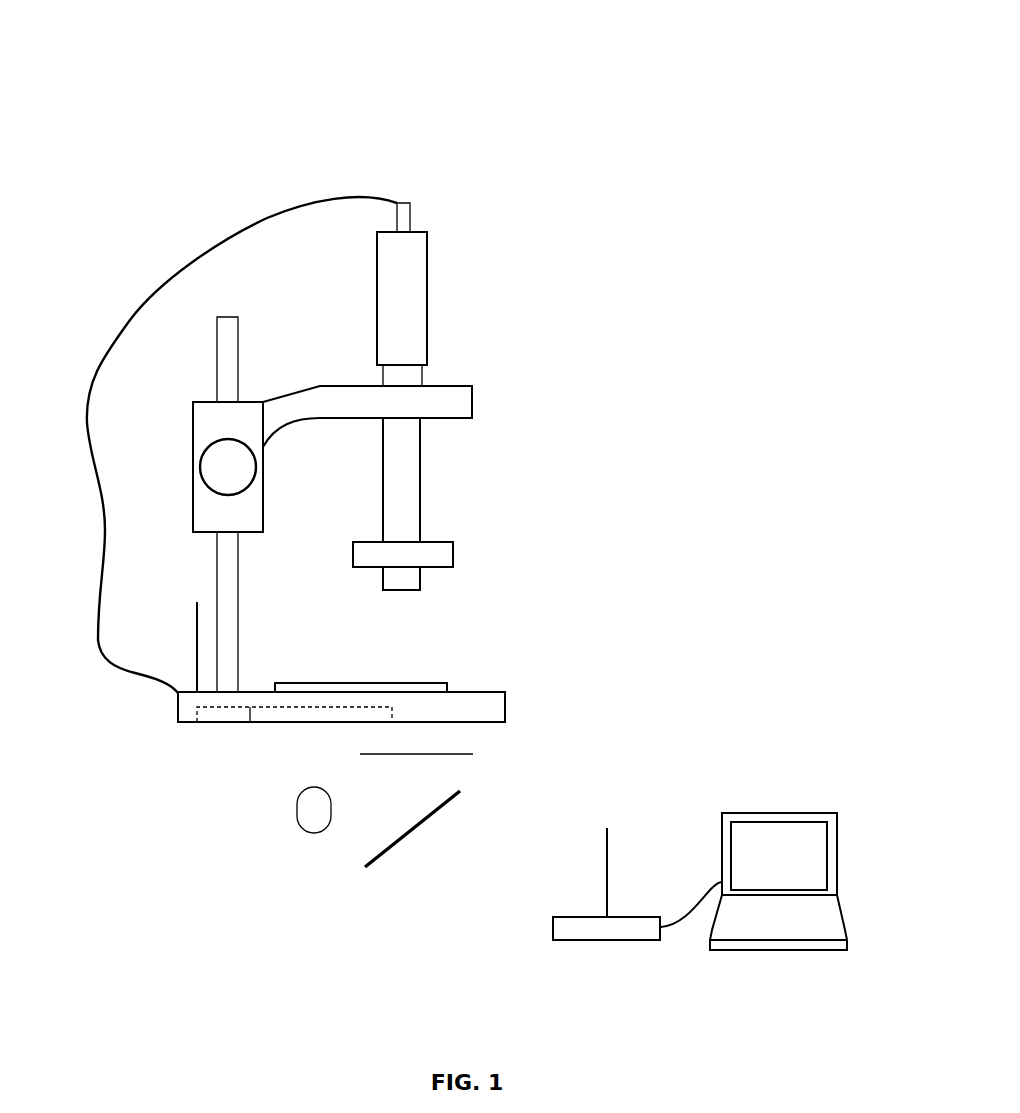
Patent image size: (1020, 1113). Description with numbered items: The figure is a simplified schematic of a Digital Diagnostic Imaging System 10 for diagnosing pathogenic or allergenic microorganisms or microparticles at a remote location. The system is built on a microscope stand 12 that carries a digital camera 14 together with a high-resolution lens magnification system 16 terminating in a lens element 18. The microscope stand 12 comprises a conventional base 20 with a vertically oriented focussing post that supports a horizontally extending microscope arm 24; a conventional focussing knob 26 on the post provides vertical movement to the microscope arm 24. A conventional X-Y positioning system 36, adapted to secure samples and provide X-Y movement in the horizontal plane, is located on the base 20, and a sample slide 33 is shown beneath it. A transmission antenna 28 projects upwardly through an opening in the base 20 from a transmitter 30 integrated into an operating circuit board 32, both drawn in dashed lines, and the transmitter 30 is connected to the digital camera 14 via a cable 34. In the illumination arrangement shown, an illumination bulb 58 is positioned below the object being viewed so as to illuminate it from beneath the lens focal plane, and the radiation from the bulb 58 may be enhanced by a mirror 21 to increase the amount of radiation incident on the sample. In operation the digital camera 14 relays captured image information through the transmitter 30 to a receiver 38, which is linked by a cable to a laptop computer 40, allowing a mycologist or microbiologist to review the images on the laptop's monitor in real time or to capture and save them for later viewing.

The Digital Diagnostic Imaging System 10 is at (582, 172).
The microscope stand 12 is at (255, 350).
The digital camera 14 is at (428, 290).
The high-resolution lens magnification system 16 is at (422, 477).
The objective lens assembly 18 is at (453, 556).
The base 20 is at (505, 708).
The mirror 21 is at (397, 845).
The microscope arm 24 is at (455, 388).
The focussing knob 26 is at (212, 440).
The transmission antenna 28 is at (197, 640).
The transmitter 30 is at (218, 712).
The operating circuit board 32 is at (293, 722).
The sample slide 33 is at (473, 754).
The cable 34 is at (103, 515).
The X-Y positioning system 36 is at (450, 685).
The receiver 38 is at (582, 908).
The laptop computer 40 is at (773, 812).
The illumination bulb 58 is at (295, 810).